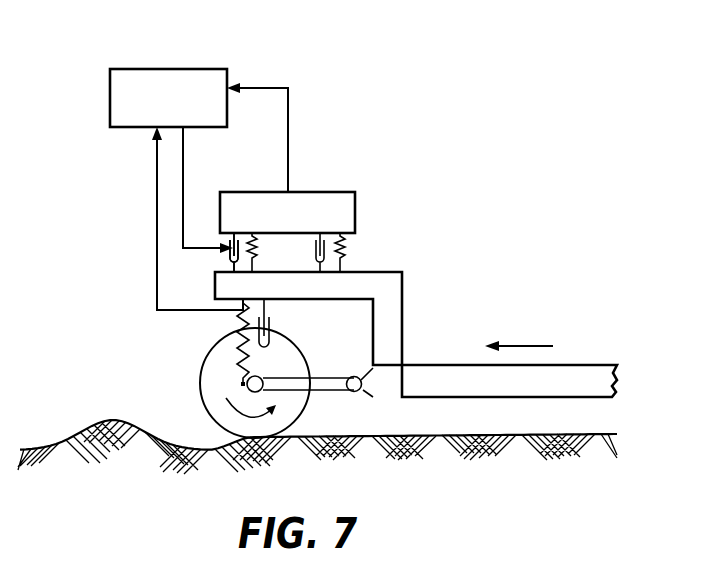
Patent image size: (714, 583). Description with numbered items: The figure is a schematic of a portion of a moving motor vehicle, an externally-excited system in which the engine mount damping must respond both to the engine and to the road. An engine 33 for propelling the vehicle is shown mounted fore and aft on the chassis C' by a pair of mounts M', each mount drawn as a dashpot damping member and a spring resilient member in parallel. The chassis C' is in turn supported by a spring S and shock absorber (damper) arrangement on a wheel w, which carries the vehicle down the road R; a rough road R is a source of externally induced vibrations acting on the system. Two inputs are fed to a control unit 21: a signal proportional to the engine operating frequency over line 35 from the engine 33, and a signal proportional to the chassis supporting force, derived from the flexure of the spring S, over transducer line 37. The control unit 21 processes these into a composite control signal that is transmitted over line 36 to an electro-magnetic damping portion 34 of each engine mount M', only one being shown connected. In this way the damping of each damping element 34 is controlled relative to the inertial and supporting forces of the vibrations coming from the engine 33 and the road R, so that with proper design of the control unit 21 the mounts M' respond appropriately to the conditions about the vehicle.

The control unit 21 is at (170, 69).
The engine 33 is at (327, 192).
The electro-magnetic damping portion 34 is at (230, 256).
The line 35 is at (263, 88).
The line 36 is at (183, 163).
The transducer line 37 is at (157, 200).
The spring S is at (250, 328).
The wheel w is at (200, 383).
The road R is at (75, 428).
The chassis C' is at (416, 334).
The mounts M' is at (388, 245).